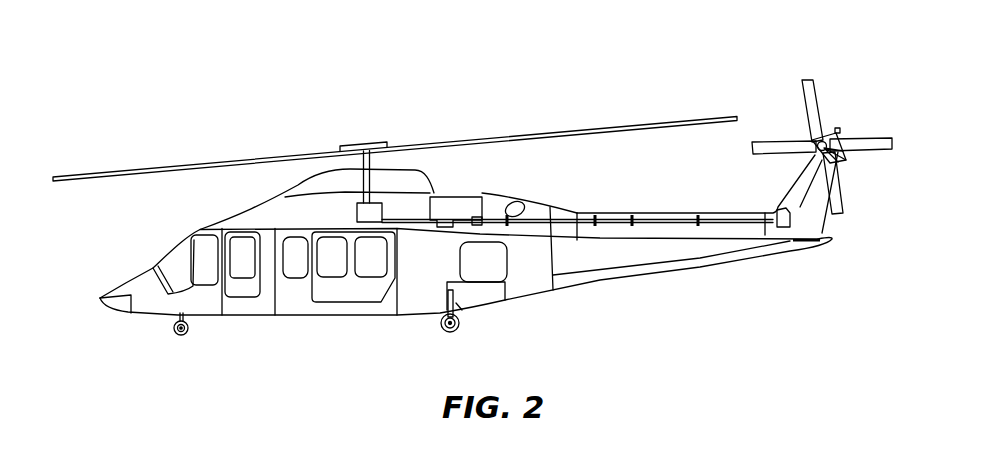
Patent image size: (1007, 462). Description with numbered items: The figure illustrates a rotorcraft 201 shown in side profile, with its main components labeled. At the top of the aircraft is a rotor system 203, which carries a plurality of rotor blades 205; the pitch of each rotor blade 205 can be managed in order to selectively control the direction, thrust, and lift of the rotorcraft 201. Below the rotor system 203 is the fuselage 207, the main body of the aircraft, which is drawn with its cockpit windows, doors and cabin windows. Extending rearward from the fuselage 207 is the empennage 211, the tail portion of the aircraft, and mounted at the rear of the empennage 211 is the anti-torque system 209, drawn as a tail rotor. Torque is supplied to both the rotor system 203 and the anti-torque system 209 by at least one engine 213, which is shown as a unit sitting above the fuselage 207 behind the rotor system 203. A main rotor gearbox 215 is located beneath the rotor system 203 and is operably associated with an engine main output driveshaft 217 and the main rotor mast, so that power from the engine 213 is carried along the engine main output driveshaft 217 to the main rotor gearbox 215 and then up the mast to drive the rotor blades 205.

The rotorcraft 201 is at (270, 103).
The rotor system 203 is at (393, 130).
The rotor blade 205 is at (601, 128).
The fuselage 207 is at (292, 315).
The anti-torque system 209 is at (843, 125).
The empennage 211 is at (677, 272).
The engine 213 is at (450, 197).
The main rotor gearbox 215 is at (357, 221).
The engine main output driveshaft 217 is at (408, 223).